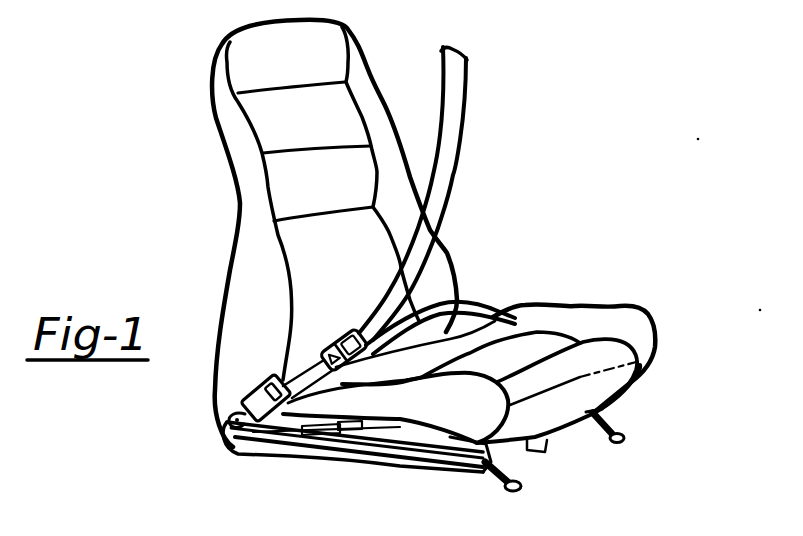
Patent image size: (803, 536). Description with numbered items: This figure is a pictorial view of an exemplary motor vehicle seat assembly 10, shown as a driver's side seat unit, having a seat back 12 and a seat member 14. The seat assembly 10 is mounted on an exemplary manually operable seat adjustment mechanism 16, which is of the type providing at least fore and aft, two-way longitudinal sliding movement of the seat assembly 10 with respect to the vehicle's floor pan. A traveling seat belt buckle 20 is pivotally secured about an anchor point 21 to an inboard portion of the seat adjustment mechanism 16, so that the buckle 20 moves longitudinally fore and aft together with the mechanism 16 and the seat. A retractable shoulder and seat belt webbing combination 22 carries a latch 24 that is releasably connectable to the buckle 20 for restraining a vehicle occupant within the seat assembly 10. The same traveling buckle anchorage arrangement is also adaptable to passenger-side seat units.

The motor vehicle seat assembly 10 is at (523, 230).
The seat back 12 is at (277, 117).
The seat member 14 is at (578, 324).
The seat adjustment mechanism 16 is at (345, 466).
The traveling seat belt buckle 20 is at (243, 382).
The anchor point 21 is at (240, 415).
The retractable shoulder and seat belt webbing combination 22 is at (422, 226).
The latch 24 is at (343, 333).